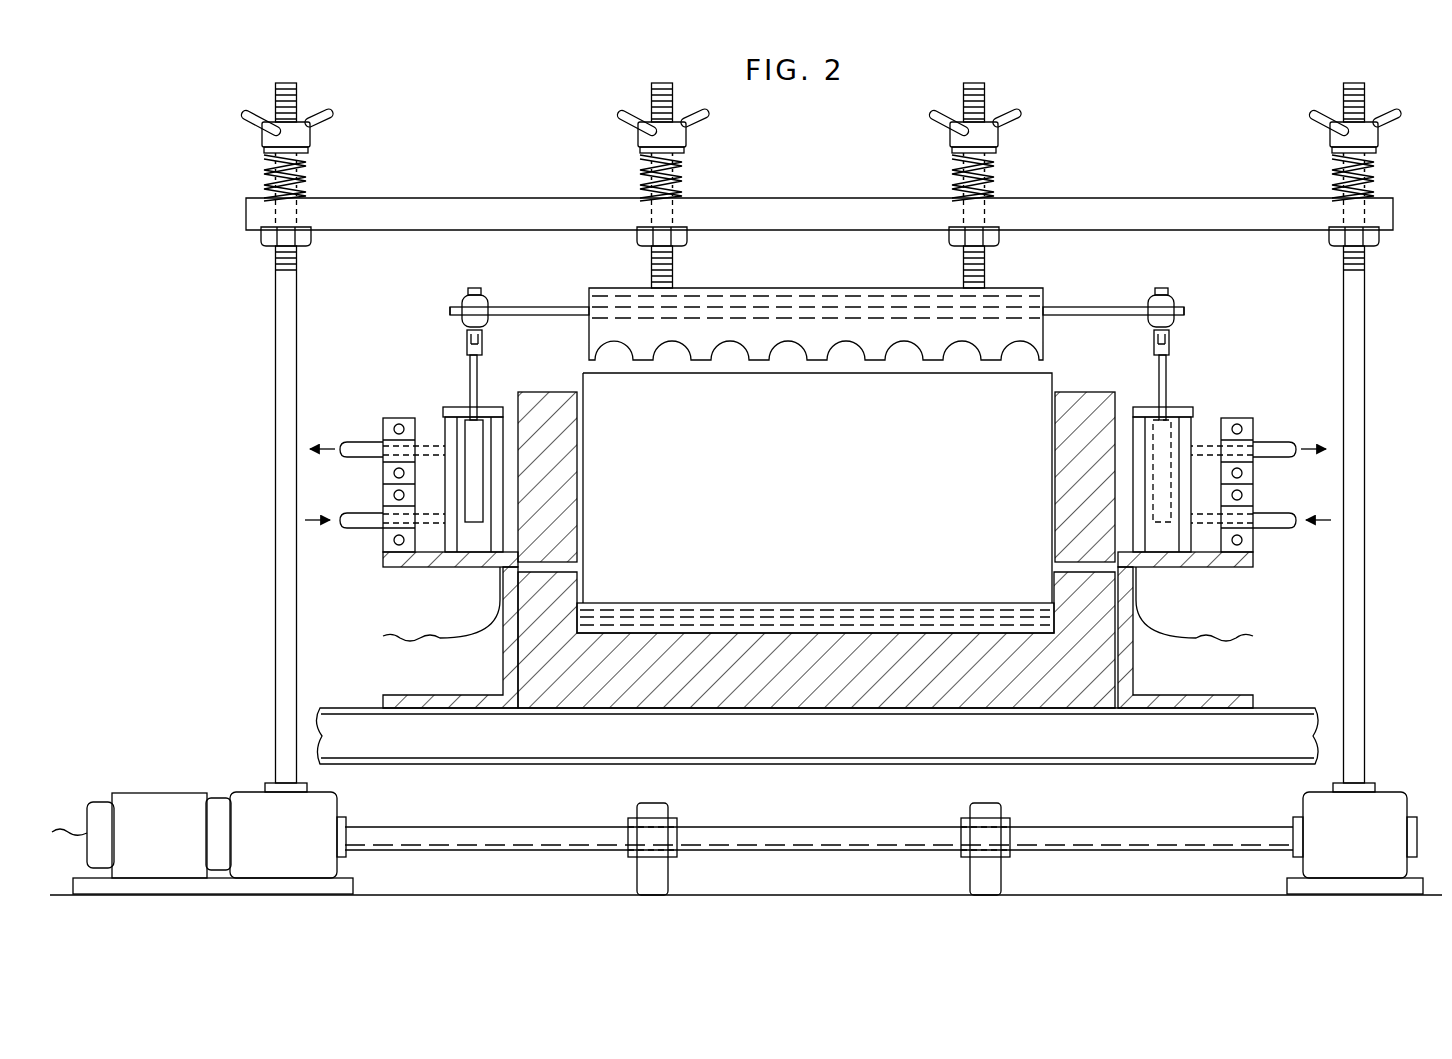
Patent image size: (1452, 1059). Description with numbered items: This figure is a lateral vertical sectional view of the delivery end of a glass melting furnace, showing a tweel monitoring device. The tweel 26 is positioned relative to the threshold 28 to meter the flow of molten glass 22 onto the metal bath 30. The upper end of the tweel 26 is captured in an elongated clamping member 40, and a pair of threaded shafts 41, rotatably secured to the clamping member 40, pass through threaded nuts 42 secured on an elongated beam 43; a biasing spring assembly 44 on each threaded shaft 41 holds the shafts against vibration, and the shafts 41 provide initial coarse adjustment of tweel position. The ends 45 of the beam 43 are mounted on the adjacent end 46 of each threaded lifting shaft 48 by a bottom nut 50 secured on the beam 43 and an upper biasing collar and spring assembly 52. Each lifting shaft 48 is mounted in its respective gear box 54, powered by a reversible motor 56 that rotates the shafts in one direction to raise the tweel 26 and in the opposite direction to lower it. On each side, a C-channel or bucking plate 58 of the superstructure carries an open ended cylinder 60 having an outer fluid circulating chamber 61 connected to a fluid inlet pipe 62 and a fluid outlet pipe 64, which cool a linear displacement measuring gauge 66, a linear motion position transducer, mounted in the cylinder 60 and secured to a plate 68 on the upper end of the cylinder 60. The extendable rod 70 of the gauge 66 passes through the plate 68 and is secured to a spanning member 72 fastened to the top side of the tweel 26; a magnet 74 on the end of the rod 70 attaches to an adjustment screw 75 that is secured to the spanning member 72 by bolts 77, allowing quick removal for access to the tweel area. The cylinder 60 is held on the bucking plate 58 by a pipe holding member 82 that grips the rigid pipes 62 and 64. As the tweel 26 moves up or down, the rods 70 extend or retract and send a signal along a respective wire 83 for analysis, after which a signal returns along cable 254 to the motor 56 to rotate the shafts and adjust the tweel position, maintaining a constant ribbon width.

The molten glass 22 is at (760, 603).
The tweel 26 is at (838, 489).
The threshold 28 is at (793, 700).
The metal bath 30 is at (820, 630).
The elongated clamping member 40 is at (590, 290).
The threaded shafts 41 is at (662, 83).
The threaded nuts 42 is at (688, 240).
The elongated beam 43 is at (818, 216).
The biasing spring assembly 44 is at (630, 143).
The ends of the beam 45 is at (246, 213).
The adjacent end of threaded lifting shaft 46 is at (286, 83).
The threaded lifting shafts 48 is at (266, 466).
The bottom nut 50 is at (263, 237).
The upper biasing collar and spring assembly 52 is at (327, 152).
The gear box 54 is at (243, 789).
The reversible motor 56 is at (163, 779).
The bucking plate 58 is at (392, 693).
The open ended cylinder 60 is at (438, 427).
The outer fluid circulating chamber 61 is at (497, 570).
The fluid inlet pipe 62 is at (370, 520).
The fluid outlet pipe 64 is at (363, 447).
The linear displacement measuring gauge 66 is at (478, 468).
The plate 68 is at (445, 415).
The extendable rod 70 is at (468, 380).
The spanning member 72 is at (565, 309).
The magnet 74 is at (466, 345).
The adjustment screw 75 is at (470, 290).
The bolts 77 is at (447, 311).
The pipe holding member 82 is at (377, 556).
The wire 83 is at (448, 635).
The cable 254 is at (83, 832).